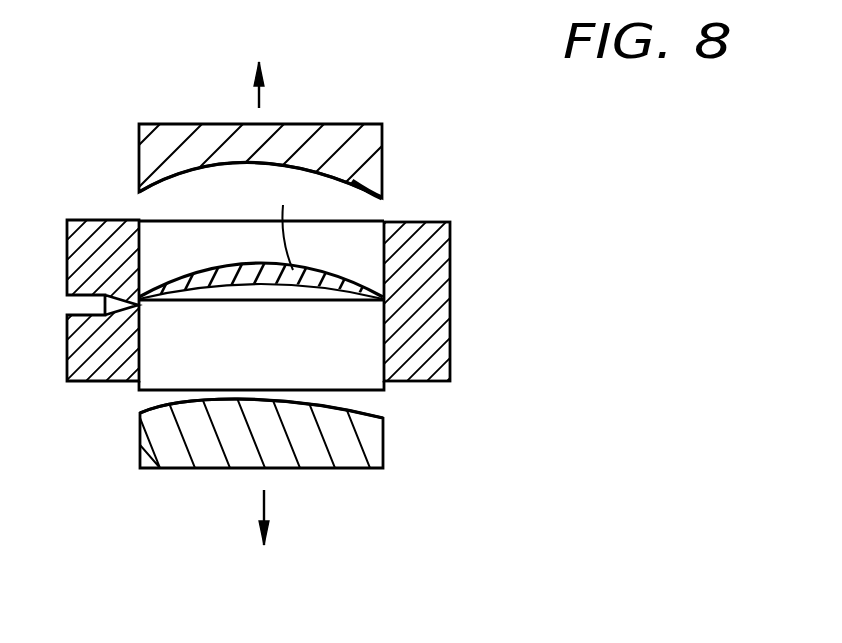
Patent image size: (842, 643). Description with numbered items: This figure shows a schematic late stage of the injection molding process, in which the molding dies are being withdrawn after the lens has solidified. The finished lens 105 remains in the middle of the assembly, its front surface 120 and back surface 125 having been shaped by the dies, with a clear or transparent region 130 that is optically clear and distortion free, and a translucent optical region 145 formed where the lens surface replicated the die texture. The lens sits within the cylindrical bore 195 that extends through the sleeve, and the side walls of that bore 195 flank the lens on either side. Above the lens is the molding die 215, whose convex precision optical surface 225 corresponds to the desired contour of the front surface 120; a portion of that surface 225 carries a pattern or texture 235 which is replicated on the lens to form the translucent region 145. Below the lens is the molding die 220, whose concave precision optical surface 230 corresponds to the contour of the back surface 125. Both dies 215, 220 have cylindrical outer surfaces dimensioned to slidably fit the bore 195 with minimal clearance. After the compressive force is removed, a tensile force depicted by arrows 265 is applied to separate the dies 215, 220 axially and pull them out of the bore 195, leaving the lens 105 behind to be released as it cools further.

The lens 105 is at (184, 268).
The front surface 120 is at (248, 262).
The back surface 125 is at (252, 290).
The clear or transparent region 130 is at (293, 218).
The translucent optical region 145 is at (372, 274).
The cylindrical bore 195 is at (160, 372).
The molding die 215 is at (157, 147).
The molding die 220 is at (178, 455).
The precision optical surface 225 is at (260, 132).
The precision optical surface 230 is at (340, 399).
The texture 235 is at (358, 192).
The tensile force arrows 265 is at (257, 100).